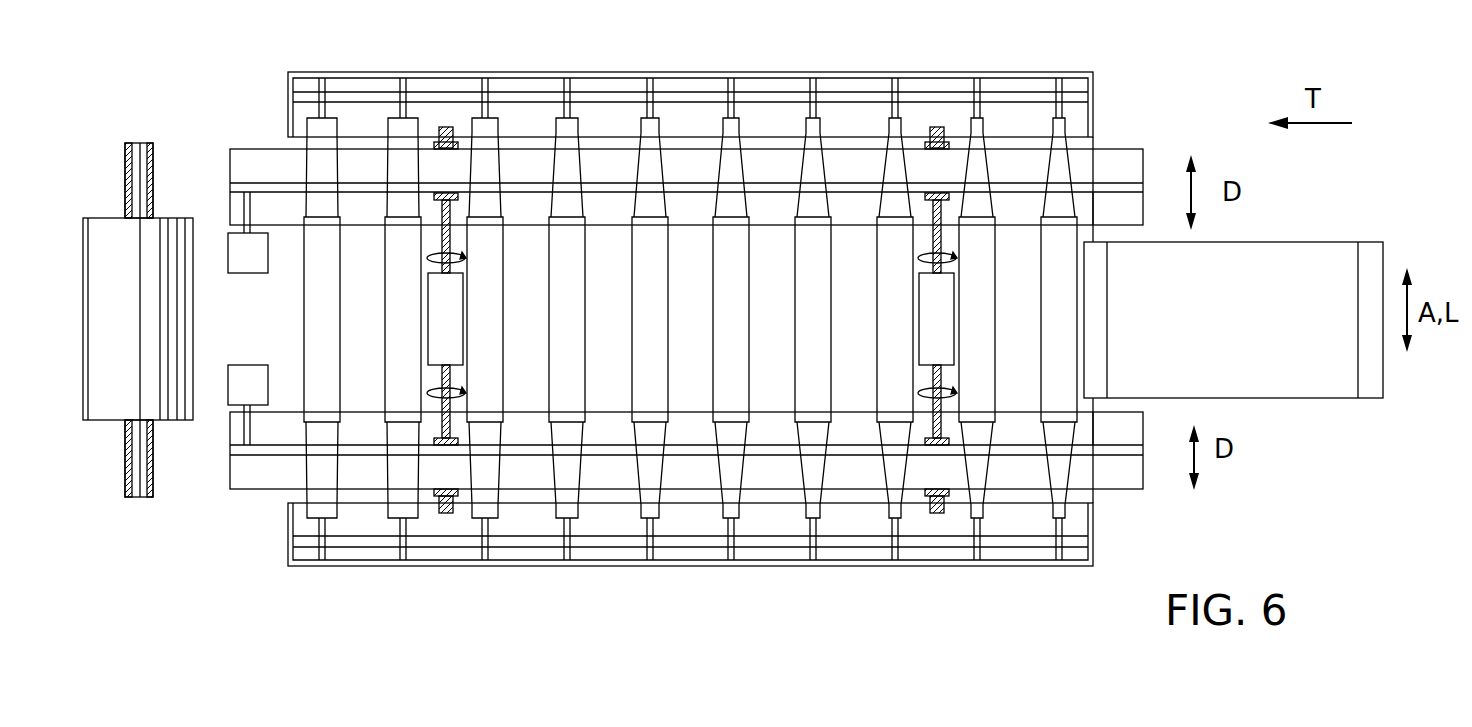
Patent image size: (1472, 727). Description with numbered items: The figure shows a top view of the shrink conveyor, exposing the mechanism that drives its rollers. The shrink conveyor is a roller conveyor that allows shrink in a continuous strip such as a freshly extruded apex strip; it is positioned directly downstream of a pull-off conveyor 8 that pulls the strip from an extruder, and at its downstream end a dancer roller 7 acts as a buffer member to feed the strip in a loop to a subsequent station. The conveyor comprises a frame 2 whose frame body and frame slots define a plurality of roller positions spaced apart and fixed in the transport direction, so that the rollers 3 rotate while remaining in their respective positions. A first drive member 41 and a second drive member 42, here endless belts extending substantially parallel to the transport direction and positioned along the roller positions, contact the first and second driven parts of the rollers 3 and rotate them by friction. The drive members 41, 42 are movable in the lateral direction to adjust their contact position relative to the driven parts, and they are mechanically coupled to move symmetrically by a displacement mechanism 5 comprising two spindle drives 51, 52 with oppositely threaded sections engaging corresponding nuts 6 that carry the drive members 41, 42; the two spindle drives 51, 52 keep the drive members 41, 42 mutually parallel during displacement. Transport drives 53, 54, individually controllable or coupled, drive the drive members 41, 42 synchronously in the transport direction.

The frame 2 is at (690, 95).
The rollers 3 is at (322, 328).
The displacement mechanism 5 is at (455, 140).
The nuts 6 is at (443, 127).
The dancer roller 7 is at (108, 400).
The pull-off conveyor 8 is at (1322, 378).
The first drive member 41 is at (258, 165).
The second drive member 42 is at (250, 480).
The spindle drive 51 is at (930, 236).
The spindle drive 52 is at (432, 245).
The transport drive 53 is at (240, 258).
The transport drive 54 is at (242, 377).